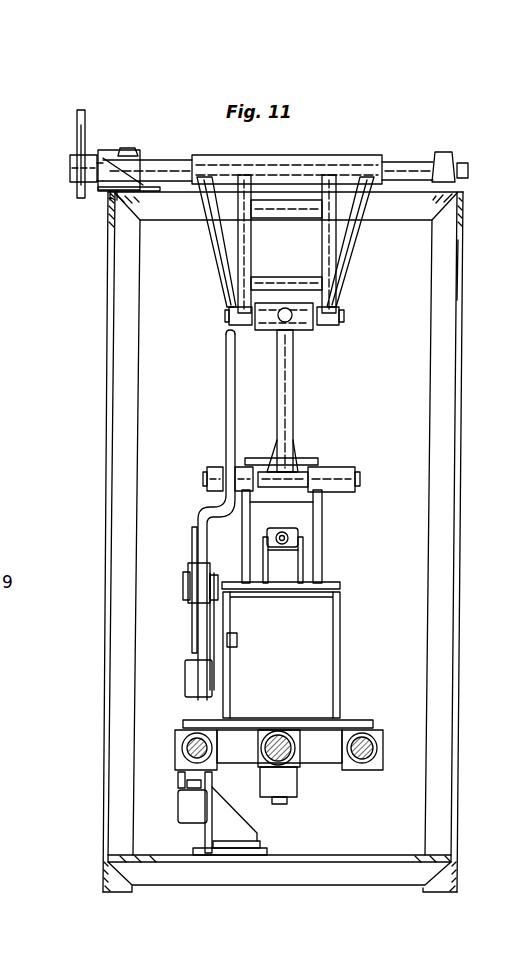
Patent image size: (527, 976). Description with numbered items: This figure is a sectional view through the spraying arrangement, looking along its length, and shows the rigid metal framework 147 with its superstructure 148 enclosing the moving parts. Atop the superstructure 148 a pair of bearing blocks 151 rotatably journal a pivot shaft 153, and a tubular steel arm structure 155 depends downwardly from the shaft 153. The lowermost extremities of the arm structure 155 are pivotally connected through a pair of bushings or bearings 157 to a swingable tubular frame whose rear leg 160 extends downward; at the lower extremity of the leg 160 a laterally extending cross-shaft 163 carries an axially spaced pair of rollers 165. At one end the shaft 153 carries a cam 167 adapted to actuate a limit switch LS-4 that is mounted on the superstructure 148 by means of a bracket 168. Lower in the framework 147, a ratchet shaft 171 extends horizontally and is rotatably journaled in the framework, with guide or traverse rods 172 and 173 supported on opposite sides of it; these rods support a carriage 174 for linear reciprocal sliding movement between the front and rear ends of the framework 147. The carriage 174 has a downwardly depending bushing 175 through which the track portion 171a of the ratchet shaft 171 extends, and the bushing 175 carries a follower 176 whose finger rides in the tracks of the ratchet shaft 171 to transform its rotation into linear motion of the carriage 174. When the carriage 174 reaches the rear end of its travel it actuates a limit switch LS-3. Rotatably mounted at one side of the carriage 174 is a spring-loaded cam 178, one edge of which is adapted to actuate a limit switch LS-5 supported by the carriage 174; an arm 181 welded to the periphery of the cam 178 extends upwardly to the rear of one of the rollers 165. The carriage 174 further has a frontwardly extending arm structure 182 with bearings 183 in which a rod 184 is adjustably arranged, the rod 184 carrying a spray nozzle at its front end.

The framework 147 is at (103, 648).
The superstructure 148 is at (463, 280).
The bearing blocks 151 is at (128, 150).
The pivot shaft 153 is at (173, 167).
The arm structure 155 is at (350, 240).
The bushings or bearings 157 is at (228, 322).
The rear leg 160 is at (288, 372).
The cross-shaft 163 is at (360, 478).
The rollers 165 is at (222, 467).
The cam 167 is at (82, 113).
The bracket 168 is at (140, 191).
The ratchet shaft 171 is at (283, 742).
The track portion 171a is at (272, 733).
The guide or traverse rod 172 is at (192, 742).
The guide or traverse rod 173 is at (370, 743).
The carriage 174 is at (343, 638).
The bushing 175 is at (297, 767).
The follower 176 is at (290, 792).
The cam 178 is at (195, 533).
The arm 181 is at (230, 388).
The arm structure 182 is at (303, 562).
The bearings 183 is at (293, 533).
The rod 184 is at (287, 540).
The limit switch LS-3 is at (195, 817).
The limit switch LS-4 is at (73, 165).
The limit switch LS-5 is at (192, 677).